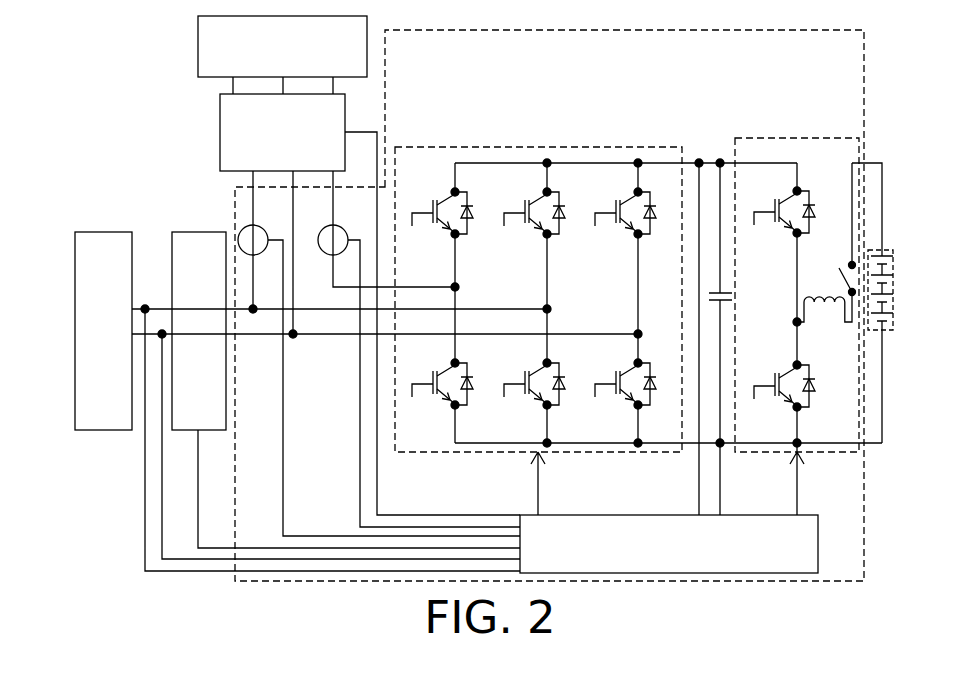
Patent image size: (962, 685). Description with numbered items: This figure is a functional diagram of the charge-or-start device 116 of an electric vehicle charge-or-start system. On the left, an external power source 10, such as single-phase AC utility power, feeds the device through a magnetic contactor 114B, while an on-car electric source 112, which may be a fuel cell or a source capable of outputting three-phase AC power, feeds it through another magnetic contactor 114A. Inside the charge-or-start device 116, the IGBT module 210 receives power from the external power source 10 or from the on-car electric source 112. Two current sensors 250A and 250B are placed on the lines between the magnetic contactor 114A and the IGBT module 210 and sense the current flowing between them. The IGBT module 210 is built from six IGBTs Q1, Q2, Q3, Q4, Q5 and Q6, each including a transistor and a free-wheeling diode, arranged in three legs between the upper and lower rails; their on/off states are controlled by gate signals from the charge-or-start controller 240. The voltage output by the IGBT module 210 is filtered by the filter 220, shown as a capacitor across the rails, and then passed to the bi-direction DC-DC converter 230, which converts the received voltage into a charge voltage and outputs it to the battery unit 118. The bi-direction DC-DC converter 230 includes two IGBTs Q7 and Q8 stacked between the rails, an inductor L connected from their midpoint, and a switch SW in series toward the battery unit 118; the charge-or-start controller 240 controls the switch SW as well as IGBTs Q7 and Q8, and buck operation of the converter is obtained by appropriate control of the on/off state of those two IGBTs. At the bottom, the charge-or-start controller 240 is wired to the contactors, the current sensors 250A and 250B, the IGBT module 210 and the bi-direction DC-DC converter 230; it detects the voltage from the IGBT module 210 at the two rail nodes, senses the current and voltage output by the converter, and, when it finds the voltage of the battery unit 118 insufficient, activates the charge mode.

The external power source 10 is at (102, 431).
The on-car electric source 112 is at (198, 50).
The magnetic contactor 114A is at (220, 105).
The magnetic contactor 114B is at (198, 232).
The charge-or-start device 116 is at (853, 58).
The battery unit 118 is at (891, 333).
The IGBT module 210 is at (538, 299).
The filter 220 is at (733, 297).
The bi-direction DC-DC converter 230 is at (797, 295).
The charge-or-start controller 240 is at (818, 545).
The current sensor 250A is at (323, 227).
The current sensor 250B is at (244, 228).
The IGBT Q1 is at (442, 207).
The IGBT Q2 is at (534, 207).
The IGBT Q3 is at (625, 207).
The IGBT Q4 is at (442, 378).
The IGBT Q5 is at (534, 378).
The IGBT Q6 is at (625, 378).
The IGBT Q7 is at (784, 206).
The IGBT Q8 is at (784, 380).
The inductor L is at (824, 298).
The switch SW is at (836, 229).